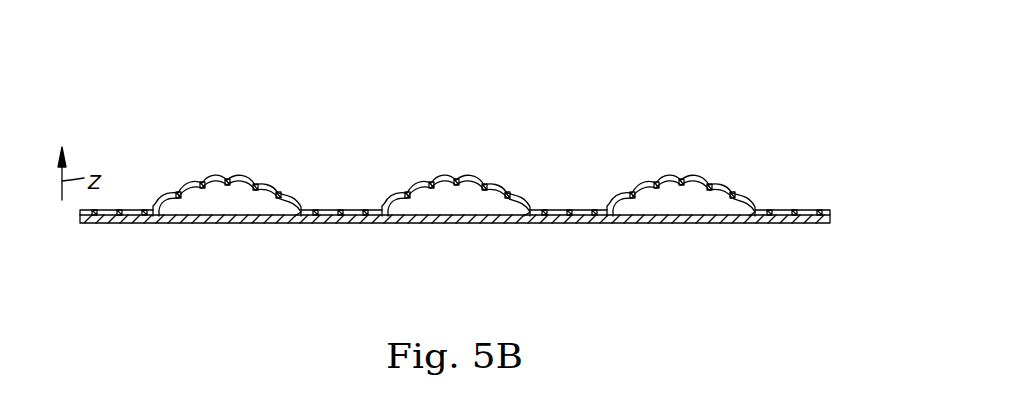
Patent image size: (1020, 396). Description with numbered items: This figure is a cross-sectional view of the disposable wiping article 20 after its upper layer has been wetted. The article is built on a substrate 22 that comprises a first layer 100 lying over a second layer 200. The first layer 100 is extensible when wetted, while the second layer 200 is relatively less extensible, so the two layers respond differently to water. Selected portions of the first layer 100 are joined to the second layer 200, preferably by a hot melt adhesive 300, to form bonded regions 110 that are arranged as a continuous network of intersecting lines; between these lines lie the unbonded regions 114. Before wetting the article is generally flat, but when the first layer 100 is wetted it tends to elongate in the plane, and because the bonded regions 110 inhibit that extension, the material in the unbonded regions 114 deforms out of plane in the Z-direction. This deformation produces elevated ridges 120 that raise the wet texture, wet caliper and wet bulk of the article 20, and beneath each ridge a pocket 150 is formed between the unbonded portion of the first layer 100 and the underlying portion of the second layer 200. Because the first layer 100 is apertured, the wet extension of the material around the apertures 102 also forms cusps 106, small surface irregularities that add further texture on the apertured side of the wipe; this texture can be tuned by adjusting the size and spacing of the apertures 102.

The disposable wiping article 20 is at (845, 197).
The substrate 22 is at (836, 221).
The first layer 100 is at (833, 208).
The apertures 102 is at (716, 183).
The cusps 106 is at (208, 180).
The bonded regions 110 is at (378, 148).
The unbonded regions 114 is at (305, 148).
The elevated ridges 120 is at (201, 181).
The pockets 150 is at (228, 207).
The second layer 200 is at (796, 224).
The adhesive 300 is at (114, 217).